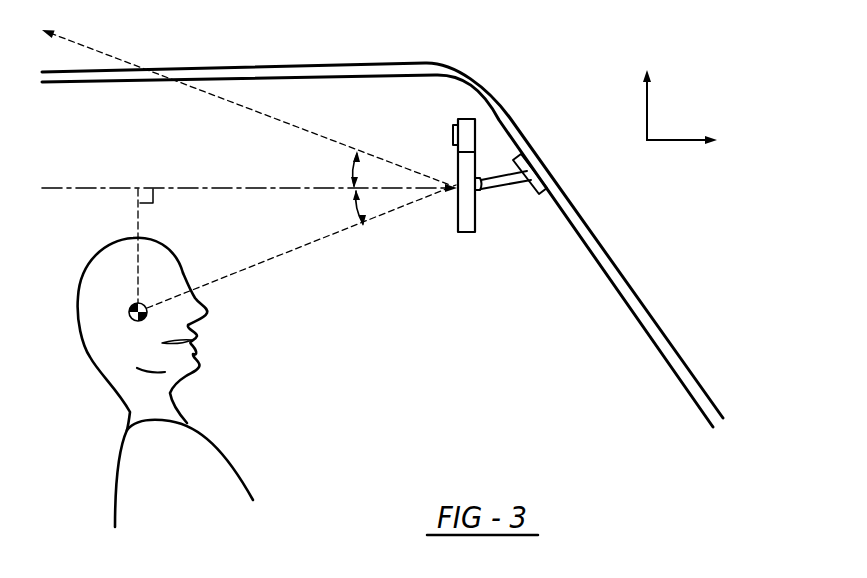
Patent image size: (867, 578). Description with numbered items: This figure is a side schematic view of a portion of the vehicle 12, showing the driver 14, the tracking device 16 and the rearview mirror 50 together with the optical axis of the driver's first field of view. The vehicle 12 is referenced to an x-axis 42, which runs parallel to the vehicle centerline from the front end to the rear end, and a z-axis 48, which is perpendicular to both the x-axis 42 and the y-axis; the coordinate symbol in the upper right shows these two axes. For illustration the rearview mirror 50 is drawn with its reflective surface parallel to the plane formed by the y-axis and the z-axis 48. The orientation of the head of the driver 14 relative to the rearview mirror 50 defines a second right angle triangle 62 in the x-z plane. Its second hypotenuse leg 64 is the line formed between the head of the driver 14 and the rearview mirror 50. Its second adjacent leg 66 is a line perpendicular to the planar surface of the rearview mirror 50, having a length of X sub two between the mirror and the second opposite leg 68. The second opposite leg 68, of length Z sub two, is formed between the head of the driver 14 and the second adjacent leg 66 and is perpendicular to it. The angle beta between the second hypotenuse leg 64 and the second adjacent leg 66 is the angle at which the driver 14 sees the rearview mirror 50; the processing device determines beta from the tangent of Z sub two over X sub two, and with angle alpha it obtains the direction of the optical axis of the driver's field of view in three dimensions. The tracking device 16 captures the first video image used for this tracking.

The vehicle 12 is at (274, 63).
The driver 14 is at (80, 343).
The tracking device 16 is at (476, 131).
The x-axis 42 is at (677, 143).
The z-axis 48 is at (647, 112).
The rearview mirror 50 is at (477, 218).
The second right angle triangle 62 is at (258, 227).
The second hypotenuse leg 64 is at (243, 272).
The second adjacent leg 66 is at (277, 188).
The second opposite leg 68 is at (138, 262).